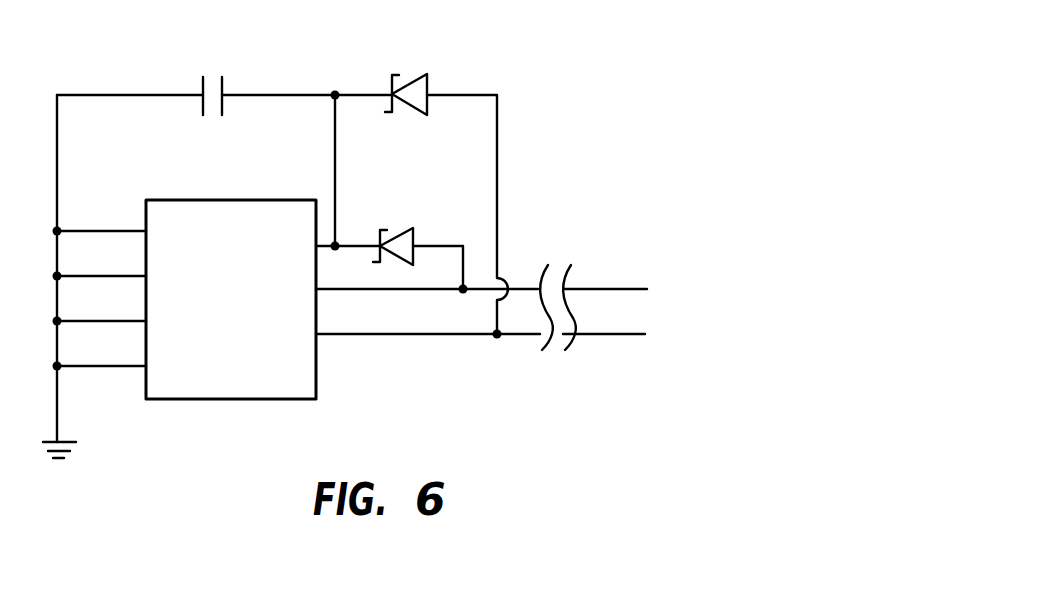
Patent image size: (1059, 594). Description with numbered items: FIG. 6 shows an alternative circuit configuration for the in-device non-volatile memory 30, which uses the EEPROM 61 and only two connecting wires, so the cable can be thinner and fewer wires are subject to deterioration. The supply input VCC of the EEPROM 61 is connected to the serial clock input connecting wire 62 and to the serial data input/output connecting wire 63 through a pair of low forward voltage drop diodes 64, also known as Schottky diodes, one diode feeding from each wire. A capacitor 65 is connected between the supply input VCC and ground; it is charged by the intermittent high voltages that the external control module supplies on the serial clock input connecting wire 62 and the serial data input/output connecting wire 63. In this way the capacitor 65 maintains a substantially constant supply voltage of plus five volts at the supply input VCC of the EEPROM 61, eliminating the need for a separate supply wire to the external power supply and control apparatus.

The non-volatile memory 30 is at (462, 249).
The EEPROM 61 is at (237, 400).
The serial clock input connecting wire 62 is at (360, 290).
The serial data input/output connecting wire 63 is at (376, 335).
The low forward voltage drop diodes 64 is at (429, 78).
The capacitor 65 is at (225, 79).